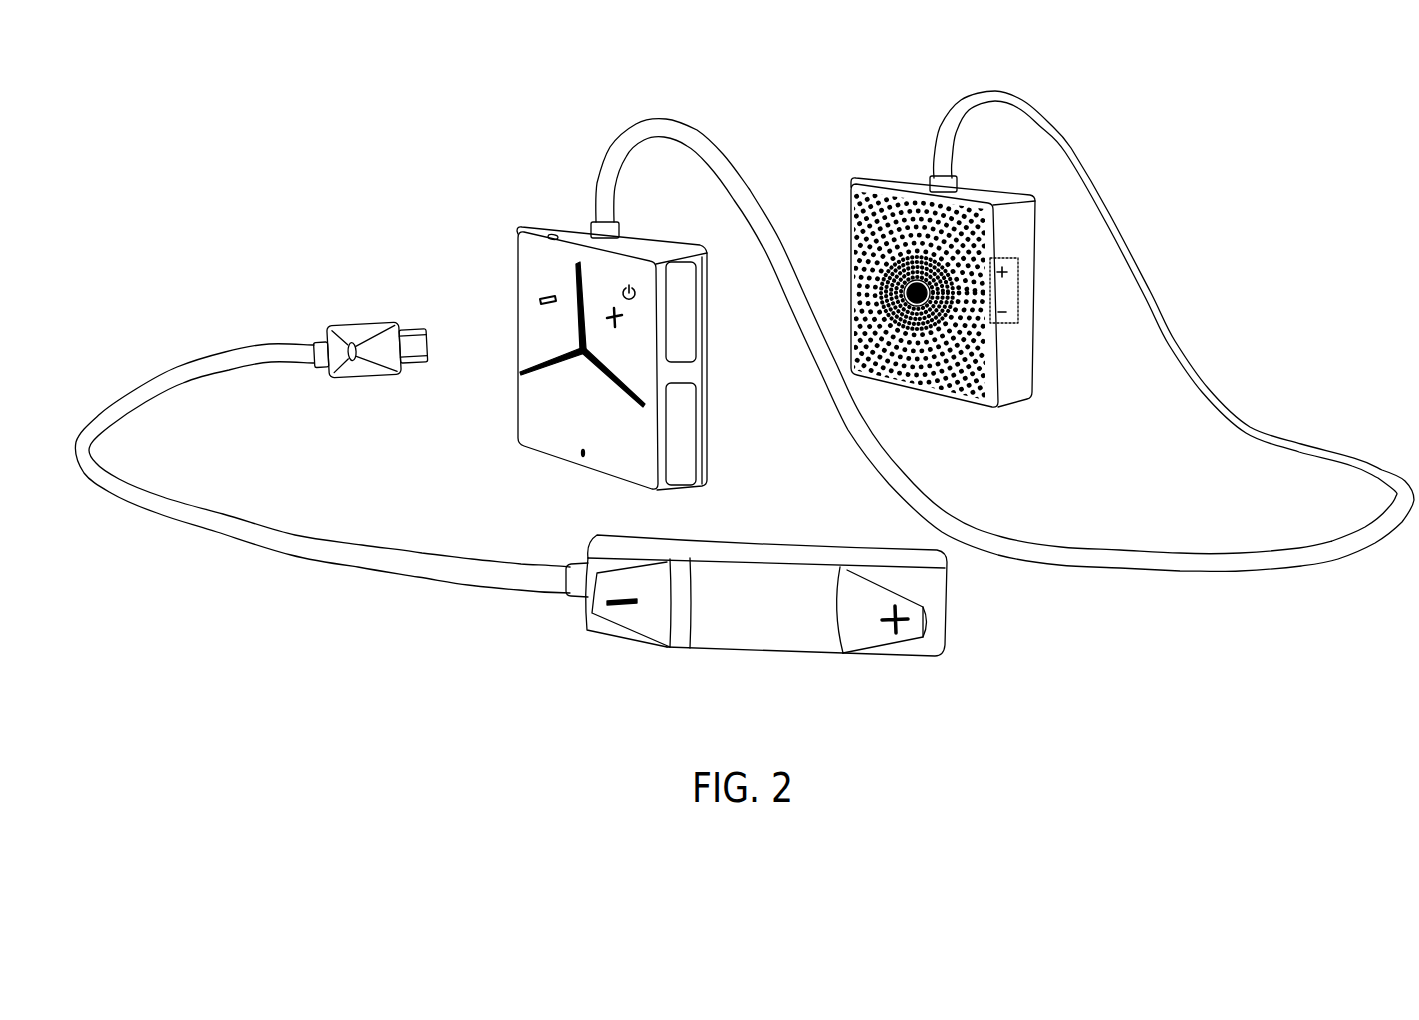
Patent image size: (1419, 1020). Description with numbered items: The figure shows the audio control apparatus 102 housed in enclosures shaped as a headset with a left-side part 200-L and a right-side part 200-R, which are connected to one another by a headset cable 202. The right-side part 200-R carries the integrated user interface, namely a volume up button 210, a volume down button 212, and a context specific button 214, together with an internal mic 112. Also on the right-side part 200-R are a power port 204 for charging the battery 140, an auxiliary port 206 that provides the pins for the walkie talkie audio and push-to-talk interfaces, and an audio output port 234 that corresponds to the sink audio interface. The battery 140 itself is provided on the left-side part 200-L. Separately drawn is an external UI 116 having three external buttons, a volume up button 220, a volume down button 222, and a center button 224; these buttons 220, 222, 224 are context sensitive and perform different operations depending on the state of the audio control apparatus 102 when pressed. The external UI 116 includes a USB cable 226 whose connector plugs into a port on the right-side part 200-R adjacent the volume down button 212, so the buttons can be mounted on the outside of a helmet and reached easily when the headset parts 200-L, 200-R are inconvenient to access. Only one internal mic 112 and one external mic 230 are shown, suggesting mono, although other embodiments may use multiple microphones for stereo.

The audio control apparatus 102 is at (572, 265).
The mic 112 is at (583, 456).
The external UI 116 is at (583, 612).
The battery 140 is at (1020, 307).
The right-side part 200-R is at (615, 323).
The left-side part 200-L is at (932, 252).
The headset cable 202 is at (1288, 452).
The power port 204 is at (712, 292).
The auxiliary port 206 is at (680, 470).
The volume up button 210 is at (620, 337).
The volume down button 212 is at (543, 320).
The context specific button 214 is at (580, 397).
The volume up button 220 is at (868, 633).
The volume down button 222 is at (647, 627).
The center button 224 is at (763, 607).
The USB cable 226 is at (228, 352).
The external mic 230 is at (722, 575).
The audio output port 234 is at (550, 232).